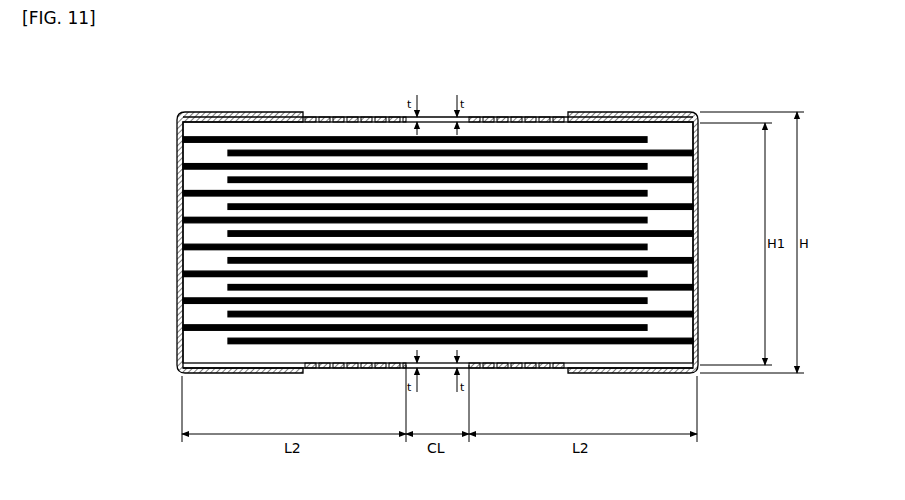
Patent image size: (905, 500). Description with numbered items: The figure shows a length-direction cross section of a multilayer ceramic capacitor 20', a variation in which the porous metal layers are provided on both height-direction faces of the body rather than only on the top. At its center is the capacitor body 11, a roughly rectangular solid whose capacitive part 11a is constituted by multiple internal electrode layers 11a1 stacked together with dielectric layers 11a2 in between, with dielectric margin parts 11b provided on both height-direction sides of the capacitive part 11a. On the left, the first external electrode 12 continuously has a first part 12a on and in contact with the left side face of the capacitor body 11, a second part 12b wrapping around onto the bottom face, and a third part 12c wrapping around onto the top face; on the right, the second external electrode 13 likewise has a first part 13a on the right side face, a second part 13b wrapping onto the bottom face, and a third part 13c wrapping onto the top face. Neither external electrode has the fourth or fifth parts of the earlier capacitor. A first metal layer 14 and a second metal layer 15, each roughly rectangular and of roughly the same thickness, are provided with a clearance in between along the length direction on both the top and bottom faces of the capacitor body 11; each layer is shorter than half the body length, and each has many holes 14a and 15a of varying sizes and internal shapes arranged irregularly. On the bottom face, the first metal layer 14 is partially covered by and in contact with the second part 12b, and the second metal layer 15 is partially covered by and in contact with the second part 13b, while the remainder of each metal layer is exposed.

The multilayer ceramic capacitor 20' is at (431, 217).
The capacitor body 11 is at (437, 121).
The capacitive part 11a is at (176, 142).
The dielectric margin part 11b is at (176, 124).
The internal electrode layer 11a1 is at (646, 142).
The dielectric layer 11a2 is at (647, 150).
The first external electrode 12 is at (177, 206).
The first part 12a is at (177, 290).
The second part 12b is at (243, 375).
The third part 12c is at (241, 111).
The second external electrode 13 is at (699, 207).
The first part 13a is at (699, 289).
The second part 13b is at (633, 375).
The third part 13c is at (631, 111).
The first metal layer 14 is at (371, 116).
The holes 14a is at (328, 116).
The second metal layer 15 is at (507, 116).
The holes 15a is at (555, 116).